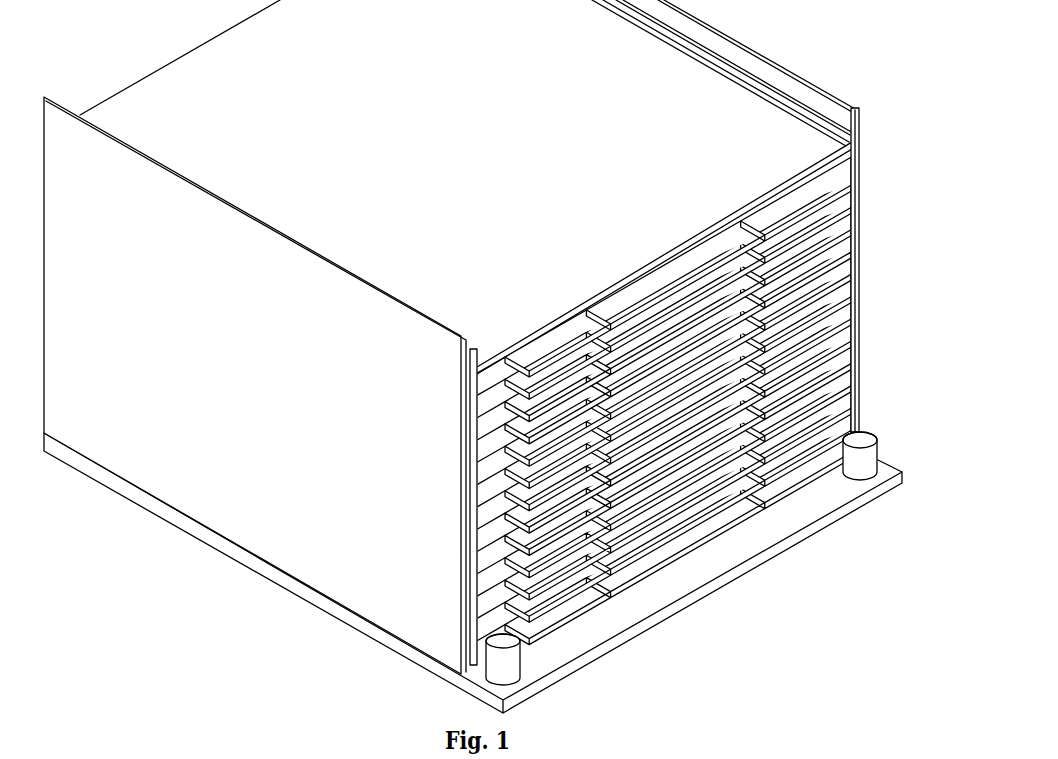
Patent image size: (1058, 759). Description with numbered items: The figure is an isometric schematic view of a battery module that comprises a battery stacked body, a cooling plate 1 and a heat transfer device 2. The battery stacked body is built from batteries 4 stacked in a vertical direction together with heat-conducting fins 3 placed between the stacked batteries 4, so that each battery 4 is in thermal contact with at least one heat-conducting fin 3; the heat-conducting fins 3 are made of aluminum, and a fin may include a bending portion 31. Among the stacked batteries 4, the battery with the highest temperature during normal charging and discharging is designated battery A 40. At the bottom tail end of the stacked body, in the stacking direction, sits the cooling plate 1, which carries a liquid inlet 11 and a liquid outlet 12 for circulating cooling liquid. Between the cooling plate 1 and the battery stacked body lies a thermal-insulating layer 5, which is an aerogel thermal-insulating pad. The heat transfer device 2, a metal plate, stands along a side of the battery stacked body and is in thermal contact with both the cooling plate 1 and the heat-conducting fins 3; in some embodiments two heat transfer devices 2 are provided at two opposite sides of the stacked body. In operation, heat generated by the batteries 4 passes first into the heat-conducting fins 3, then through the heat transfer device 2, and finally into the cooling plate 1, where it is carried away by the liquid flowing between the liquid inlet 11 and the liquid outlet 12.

The cooling plate 1 is at (723, 555).
The liquid inlet 11 is at (518, 672).
The liquid outlet 12 is at (877, 443).
The heat transfer device 2 is at (335, 475).
The heat-conducting fin 3 is at (730, 237).
The bending portion 31 is at (797, 116).
The batteries 4 is at (635, 178).
The battery A 40 is at (617, 284).
The thermal-insulating layer 5 is at (632, 580).